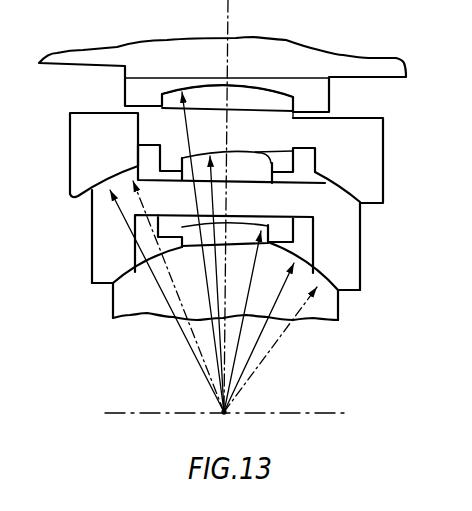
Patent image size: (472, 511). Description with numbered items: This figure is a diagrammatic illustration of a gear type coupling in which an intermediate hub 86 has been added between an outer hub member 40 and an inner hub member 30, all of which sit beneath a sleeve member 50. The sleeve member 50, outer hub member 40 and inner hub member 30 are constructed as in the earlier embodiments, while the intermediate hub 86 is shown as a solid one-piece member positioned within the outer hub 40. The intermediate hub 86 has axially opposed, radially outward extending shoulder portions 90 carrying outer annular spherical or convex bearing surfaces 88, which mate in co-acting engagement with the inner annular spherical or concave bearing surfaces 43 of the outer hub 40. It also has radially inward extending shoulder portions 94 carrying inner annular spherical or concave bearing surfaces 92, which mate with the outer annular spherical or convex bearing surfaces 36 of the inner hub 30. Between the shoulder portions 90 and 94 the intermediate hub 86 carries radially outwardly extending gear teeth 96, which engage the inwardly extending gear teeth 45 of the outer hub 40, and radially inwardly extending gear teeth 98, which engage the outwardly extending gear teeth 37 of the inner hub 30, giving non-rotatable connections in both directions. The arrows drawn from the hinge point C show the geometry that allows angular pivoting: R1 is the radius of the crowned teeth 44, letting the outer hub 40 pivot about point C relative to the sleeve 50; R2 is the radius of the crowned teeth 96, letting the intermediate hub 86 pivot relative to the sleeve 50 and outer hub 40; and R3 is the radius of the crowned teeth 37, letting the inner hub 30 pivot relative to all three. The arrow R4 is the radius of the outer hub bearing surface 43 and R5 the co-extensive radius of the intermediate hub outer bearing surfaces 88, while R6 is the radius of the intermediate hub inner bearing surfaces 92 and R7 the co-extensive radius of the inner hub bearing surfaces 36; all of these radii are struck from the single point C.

The inner hub member 30 is at (142, 319).
The outer annular spherical bearing surfaces 36 is at (128, 260).
The outwardly extending gear teeth 37 is at (133, 216).
The outer hub member 40 is at (384, 123).
The inner annular spherical bearing surfaces 43 is at (350, 196).
The crowned teeth 44 is at (207, 97).
The inwardly extending gear teeth 45 is at (168, 156).
The sleeve member 50 is at (286, 63).
The intermediate hub member 86 is at (346, 267).
The outer annular spherical bearing surfaces 88 is at (349, 182).
The radially outward extending shoulder portions 90 is at (140, 143).
The inner annular spherical bearing surfaces 92 is at (118, 284).
The radially inward extending shoulder portions 94 is at (100, 287).
The radially outwardly extending gear teeth 96 is at (253, 167).
The radially inwardly extending gear teeth 98 is at (276, 232).
The radius of crowned teeth 44 R1 is at (196, 131).
The radius of crowned teeth 96 R2 is at (214, 160).
The radius of crowned teeth 37 R3 is at (258, 243).
The radius of outer hub bearing surface R4 is at (113, 178).
The radius of intermediate hub outer bearing surfaces R5 is at (116, 208).
The radius of intermediate hub inner bearing surfaces R6 is at (318, 298).
The radius of inner hub bearing surfaces R7 is at (313, 272).
The hinge point C is at (228, 409).